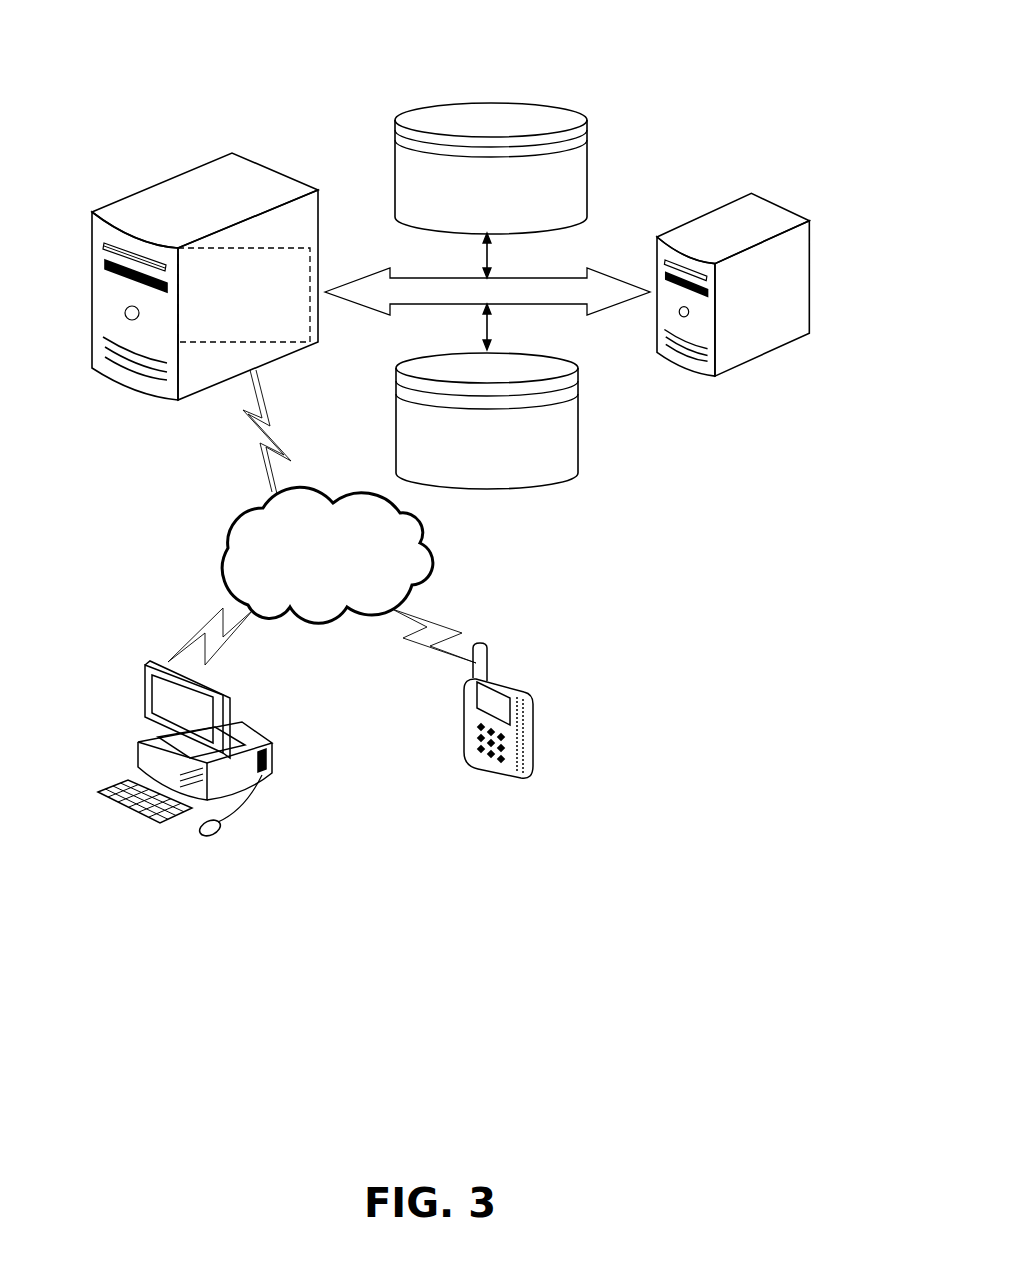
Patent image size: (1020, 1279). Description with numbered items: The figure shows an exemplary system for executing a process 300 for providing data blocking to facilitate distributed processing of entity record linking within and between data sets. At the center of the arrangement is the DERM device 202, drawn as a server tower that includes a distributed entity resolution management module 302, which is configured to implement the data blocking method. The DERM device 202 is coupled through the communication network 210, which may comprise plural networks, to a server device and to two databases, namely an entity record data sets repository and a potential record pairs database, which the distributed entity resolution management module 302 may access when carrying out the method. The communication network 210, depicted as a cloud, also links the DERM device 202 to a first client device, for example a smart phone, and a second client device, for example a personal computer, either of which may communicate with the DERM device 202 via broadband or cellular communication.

The process 300 is at (283, 70).
The DERM device 202 is at (164, 193).
The distributed entity resolution management module 302 is at (244, 295).
The communication network 210 is at (409, 449).